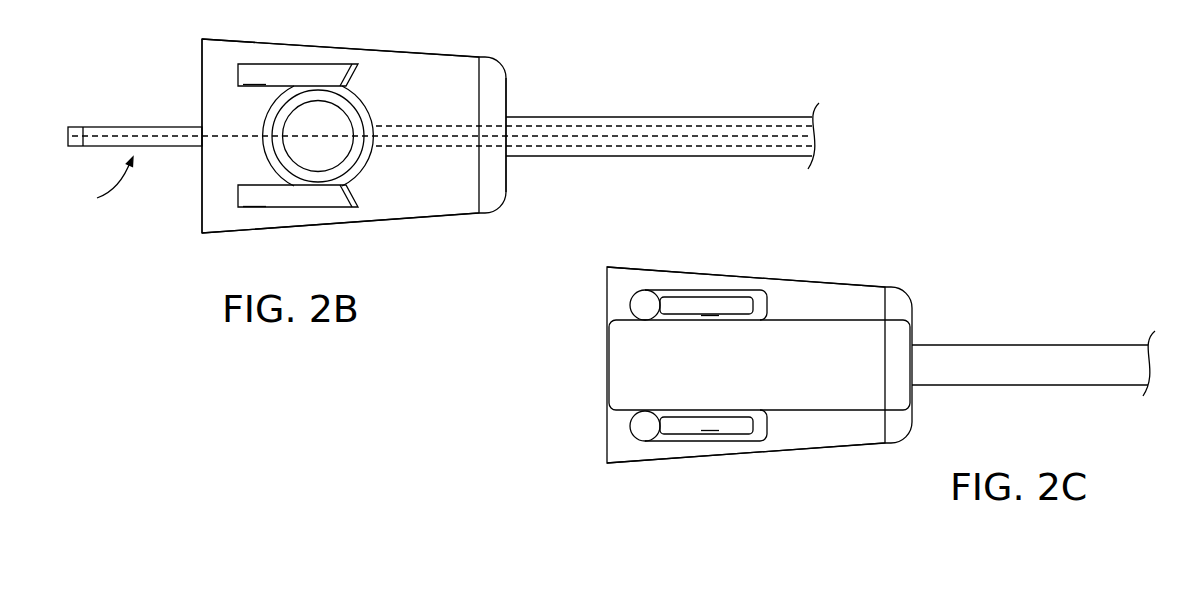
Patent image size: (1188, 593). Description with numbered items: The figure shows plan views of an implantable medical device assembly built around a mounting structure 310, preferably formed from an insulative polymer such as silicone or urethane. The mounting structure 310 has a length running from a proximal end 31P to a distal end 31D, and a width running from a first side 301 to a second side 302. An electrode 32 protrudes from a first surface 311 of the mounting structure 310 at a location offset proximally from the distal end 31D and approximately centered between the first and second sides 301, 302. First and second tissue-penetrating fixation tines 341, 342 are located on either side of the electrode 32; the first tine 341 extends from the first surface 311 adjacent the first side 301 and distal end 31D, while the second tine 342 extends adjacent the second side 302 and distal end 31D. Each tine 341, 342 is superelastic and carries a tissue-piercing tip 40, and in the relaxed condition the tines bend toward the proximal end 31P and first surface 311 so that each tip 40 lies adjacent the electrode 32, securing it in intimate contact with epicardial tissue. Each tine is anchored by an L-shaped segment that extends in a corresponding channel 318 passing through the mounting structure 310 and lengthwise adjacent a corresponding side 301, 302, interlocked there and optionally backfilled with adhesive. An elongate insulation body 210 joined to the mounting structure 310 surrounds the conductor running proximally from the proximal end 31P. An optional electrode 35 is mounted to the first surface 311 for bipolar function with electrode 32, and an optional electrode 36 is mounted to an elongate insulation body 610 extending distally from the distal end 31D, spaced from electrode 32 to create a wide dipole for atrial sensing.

In FIG. 2B, the optional electrode 36 is at (80, 126).
In FIG. 2B, the elongate insulation body 610 is at (98, 184).
In FIG. 2B, the distal end 31D is at (201, 97).
In FIG. 2B, the proximal end 31P is at (508, 178).
In FIG. 2B, the first surface 311 is at (247, 170).
In FIG. 2B, the mounting structure 310 is at (472, 70).
In FIG. 2B, the first side 301 is at (374, 50).
In FIG. 2C, the first side 301 is at (836, 448).
In FIG. 2B, the second side 302 is at (393, 223).
In FIG. 2C, the second side 302 is at (838, 280).
In FIG. 2B, the electrode 32 is at (308, 160).
In FIG. 2B, the optional electrode 35 is at (380, 113).
In FIG. 2B, the tissue-piercing tip 40 is at (353, 68).
In FIG. 2B, the first tissue-penetrating fixation tine 341 is at (296, 63).
In FIG. 2C, the first tissue-penetrating fixation tine 341 is at (743, 440).
In FIG. 2B, the second tissue-penetrating fixation tine 342 is at (296, 210).
In FIG. 2C, the second tissue-penetrating fixation tine 342 is at (750, 290).
In FIG. 2C, the channel 318 is at (727, 291).
In FIG. 2B, the elongate insulation body 210 is at (662, 113).
In FIG. 2C, the elongate insulation body 210 is at (1070, 340).